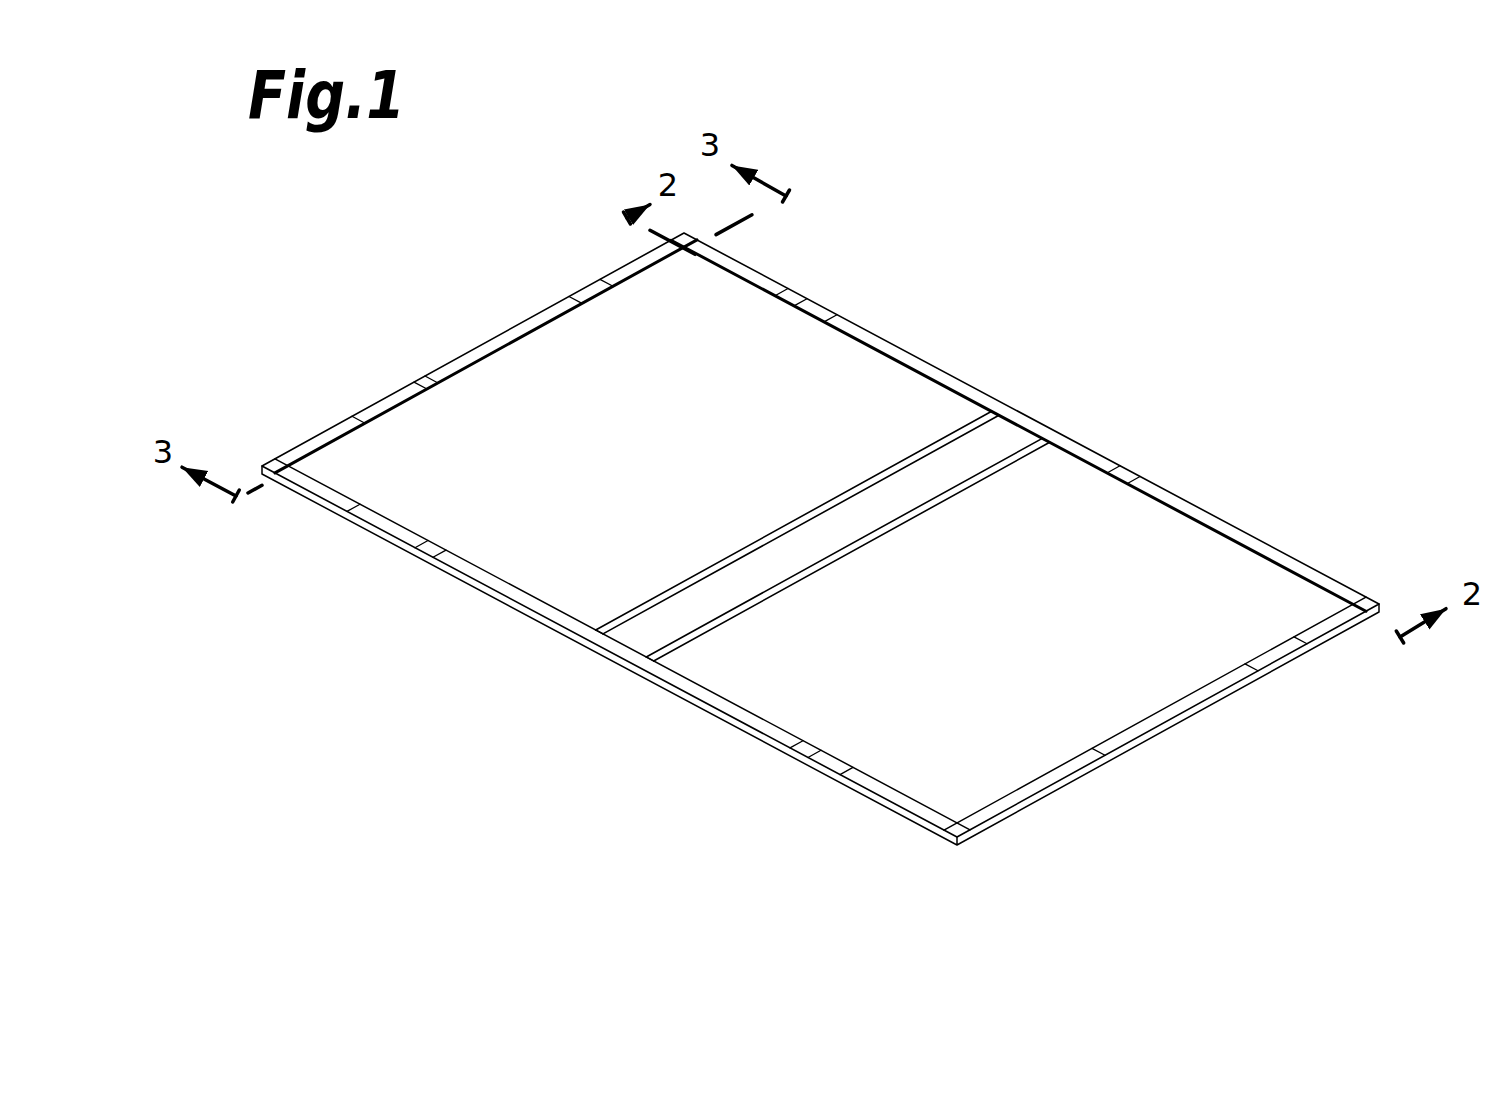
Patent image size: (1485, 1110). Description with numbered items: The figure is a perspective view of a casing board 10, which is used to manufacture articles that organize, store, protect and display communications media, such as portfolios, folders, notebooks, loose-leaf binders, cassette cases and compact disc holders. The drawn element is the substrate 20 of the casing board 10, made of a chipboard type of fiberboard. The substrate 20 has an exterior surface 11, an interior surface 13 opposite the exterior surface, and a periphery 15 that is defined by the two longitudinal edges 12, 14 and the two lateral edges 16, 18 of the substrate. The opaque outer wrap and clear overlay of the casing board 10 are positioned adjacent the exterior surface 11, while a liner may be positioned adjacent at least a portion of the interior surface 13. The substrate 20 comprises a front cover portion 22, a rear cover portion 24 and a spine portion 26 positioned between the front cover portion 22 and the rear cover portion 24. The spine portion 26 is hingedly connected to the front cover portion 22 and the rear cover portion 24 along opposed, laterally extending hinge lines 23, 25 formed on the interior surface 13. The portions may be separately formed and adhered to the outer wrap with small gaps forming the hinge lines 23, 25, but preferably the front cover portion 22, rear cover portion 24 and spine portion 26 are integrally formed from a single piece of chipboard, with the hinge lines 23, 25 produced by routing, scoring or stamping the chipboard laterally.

The casing board 10 is at (478, 278).
The exterior surface 11 is at (913, 830).
The longitudinal edge 12 is at (386, 394).
The interior surface 13 is at (816, 730).
The longitudinal edge 14 is at (1279, 657).
The periphery 15 is at (453, 363).
The lateral edge 16 is at (777, 288).
The lateral edge 18 is at (397, 536).
The substrate 20 is at (1202, 560).
The front cover portion 22 is at (598, 451).
The hinge line 23 is at (580, 641).
The rear cover portion 24 is at (998, 662).
The hinge line 25 is at (1057, 443).
The spine portion 26 is at (790, 551).